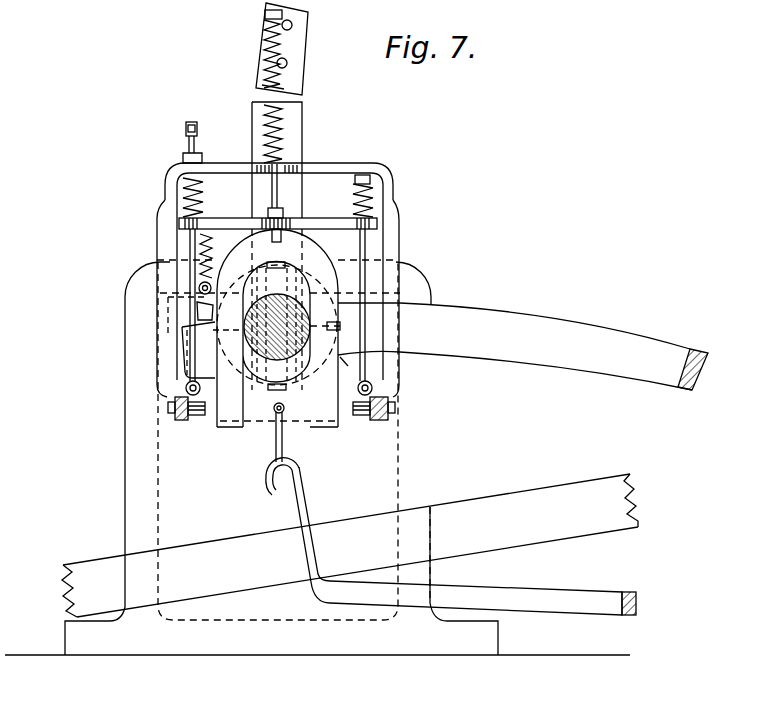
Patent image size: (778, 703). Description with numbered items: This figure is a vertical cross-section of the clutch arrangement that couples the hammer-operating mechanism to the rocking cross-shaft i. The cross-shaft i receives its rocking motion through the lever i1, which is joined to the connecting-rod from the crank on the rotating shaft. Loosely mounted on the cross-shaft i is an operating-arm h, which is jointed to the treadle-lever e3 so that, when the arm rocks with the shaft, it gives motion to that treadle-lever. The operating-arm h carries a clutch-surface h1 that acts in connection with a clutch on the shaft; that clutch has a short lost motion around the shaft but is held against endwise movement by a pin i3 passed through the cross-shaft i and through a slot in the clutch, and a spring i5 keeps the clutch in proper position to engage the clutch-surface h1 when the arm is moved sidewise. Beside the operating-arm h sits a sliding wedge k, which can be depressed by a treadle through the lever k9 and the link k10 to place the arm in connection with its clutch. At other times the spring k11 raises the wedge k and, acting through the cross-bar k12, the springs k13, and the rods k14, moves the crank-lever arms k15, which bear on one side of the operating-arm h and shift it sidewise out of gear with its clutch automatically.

The lever i1 is at (282, 49).
The spring k11 is at (278, 80).
The springs k13 is at (402, 198).
The cross-bar k12 is at (337, 220).
The rods k14 is at (405, 250).
The springs i5 is at (250, 246).
The sliding wedge k is at (277, 329).
The cross-shaft i is at (277, 327).
The operating-arm h is at (438, 343).
The clutch-surface h1 is at (302, 373).
The crank-lever arms k15 is at (365, 418).
The pin i3 is at (268, 390).
The link k10 is at (285, 441).
The treadle-lever e3 is at (350, 545).
The lever k9 is at (483, 598).